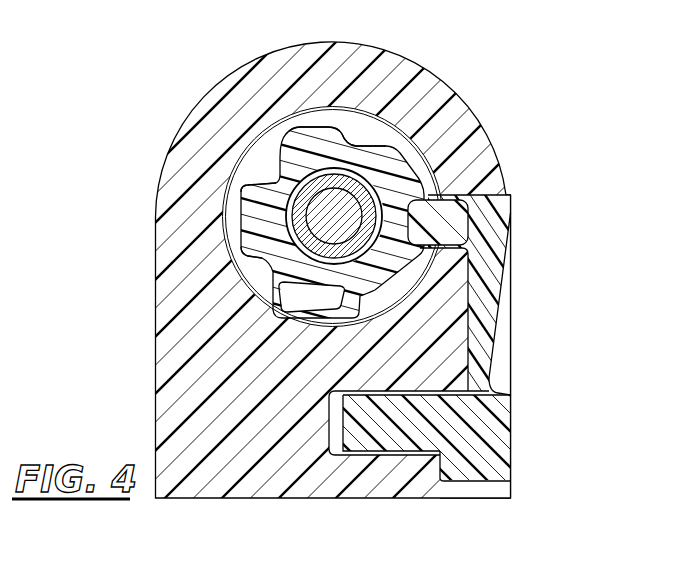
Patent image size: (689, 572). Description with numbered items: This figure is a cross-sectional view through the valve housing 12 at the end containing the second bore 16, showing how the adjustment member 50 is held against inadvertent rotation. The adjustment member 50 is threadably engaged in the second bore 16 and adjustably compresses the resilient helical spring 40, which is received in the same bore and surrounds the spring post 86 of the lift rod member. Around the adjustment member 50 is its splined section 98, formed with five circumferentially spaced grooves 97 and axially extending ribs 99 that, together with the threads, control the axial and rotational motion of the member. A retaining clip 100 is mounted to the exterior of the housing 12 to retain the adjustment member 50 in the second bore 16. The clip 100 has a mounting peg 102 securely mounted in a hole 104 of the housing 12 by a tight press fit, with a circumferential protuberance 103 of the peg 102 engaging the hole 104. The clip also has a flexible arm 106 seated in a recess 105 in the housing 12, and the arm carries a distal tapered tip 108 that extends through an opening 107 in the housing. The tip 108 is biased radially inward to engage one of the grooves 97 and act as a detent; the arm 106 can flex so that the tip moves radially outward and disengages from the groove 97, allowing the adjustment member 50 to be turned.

The housing 12 is at (222, 82).
The second bore 16 is at (281, 171).
The helical spring 40 is at (305, 201).
The adjustment member 50 is at (238, 237).
The spring post 86 is at (334, 214).
The grooves 97 is at (280, 270).
The splined section 98 is at (422, 173).
The ribs 99 is at (418, 190).
The retaining clip 100 is at (480, 418).
The mounting peg 102 is at (395, 423).
The circumferential protuberance 103 is at (440, 458).
The hole 104 is at (337, 430).
The recess 105 is at (505, 350).
The flexible arm 106 is at (482, 304).
The opening 107 is at (480, 194).
The tapered tip 108 is at (421, 223).